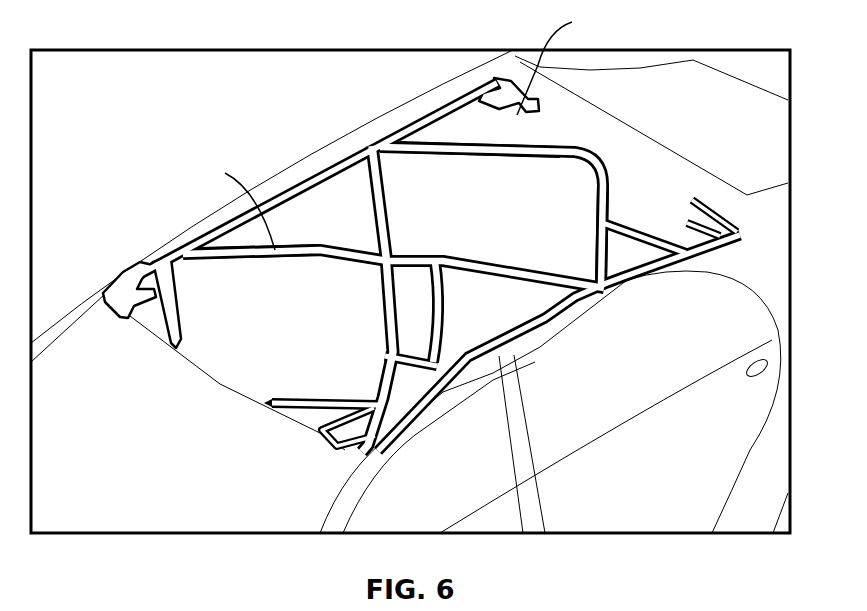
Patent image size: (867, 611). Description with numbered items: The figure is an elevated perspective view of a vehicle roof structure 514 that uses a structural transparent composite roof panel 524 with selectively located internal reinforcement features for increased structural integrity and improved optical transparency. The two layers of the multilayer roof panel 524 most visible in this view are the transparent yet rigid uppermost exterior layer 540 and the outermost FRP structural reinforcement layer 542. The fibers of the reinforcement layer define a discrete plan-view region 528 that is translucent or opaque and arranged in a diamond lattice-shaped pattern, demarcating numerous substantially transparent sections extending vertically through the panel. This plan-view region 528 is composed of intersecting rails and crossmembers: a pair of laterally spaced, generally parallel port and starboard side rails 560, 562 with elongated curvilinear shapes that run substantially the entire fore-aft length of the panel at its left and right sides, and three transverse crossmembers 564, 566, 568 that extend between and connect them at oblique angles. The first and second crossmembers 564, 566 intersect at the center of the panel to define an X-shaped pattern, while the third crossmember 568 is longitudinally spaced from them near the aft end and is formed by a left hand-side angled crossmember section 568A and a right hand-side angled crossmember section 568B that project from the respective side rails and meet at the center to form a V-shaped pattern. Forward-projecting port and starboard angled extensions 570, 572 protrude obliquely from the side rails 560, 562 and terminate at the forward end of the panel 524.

The vehicle roof structure 514 is at (176, 141).
The composite roof panel 524 is at (213, 382).
The plan-view region 528 is at (517, 115).
The exterior layer 540 is at (190, 266).
The FRP structural reinforcement layer 542 is at (127, 290).
The side rail 560 is at (537, 323).
The side rail 562 is at (300, 182).
The first crossmember 564 is at (275, 250).
The second crossmember 566 is at (380, 147).
The third crossmember 568 is at (590, 160).
The first angled crossmember section 568A is at (607, 203).
The second angled crossmember section 568B is at (447, 143).
The port angled extension 570 is at (310, 402).
The starboard angled extension 572 is at (173, 323).